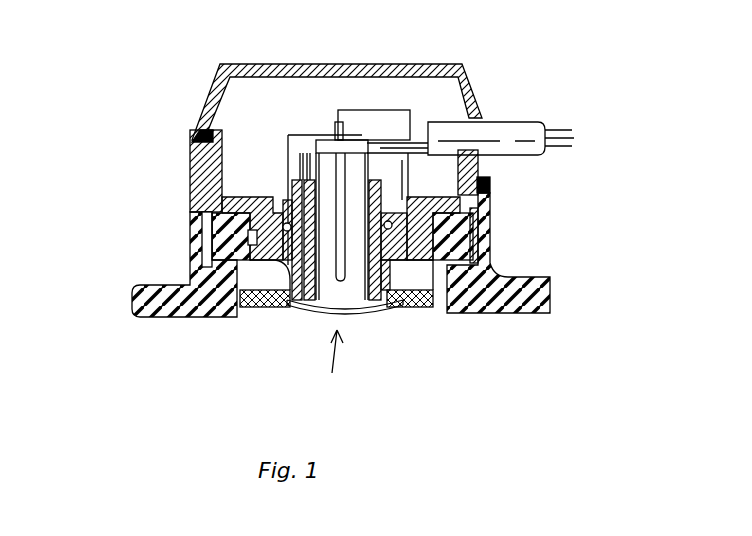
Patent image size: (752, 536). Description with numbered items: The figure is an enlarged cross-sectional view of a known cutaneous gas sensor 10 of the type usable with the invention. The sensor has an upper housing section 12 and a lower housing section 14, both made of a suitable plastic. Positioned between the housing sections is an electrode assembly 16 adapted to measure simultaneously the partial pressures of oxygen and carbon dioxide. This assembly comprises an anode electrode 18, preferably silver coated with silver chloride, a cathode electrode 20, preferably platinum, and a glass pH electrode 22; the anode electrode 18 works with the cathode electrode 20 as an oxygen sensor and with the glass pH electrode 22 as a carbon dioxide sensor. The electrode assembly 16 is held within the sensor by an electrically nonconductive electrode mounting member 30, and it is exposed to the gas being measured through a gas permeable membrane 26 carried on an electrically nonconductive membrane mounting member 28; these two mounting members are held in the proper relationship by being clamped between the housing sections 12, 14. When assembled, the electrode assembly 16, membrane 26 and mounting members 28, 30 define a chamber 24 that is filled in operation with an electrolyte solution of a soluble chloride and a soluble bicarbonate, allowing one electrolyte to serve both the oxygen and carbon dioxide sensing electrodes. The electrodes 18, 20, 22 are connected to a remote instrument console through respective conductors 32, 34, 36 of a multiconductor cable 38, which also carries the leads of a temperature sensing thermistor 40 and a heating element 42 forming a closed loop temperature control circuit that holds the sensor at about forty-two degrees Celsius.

The cutaneous gas sensor 10 is at (72, 91).
The upper housing section 12 is at (478, 92).
The lower housing section 14 is at (505, 277).
The electrode assembly 16 is at (336, 368).
The anode electrode 18 is at (265, 308).
The cathode electrode 20 is at (287, 307).
The glass pH electrode 22 is at (355, 300).
The chamber 24 is at (431, 300).
The gas permeable membrane 26 is at (317, 310).
The membrane mounting member 28 is at (435, 303).
The electrode mounting member 30 is at (190, 150).
The conductor 32 is at (393, 140).
The conductor 34 is at (290, 134).
The conductor 36 is at (337, 122).
The multiconductor cable 38 is at (523, 156).
The temperature sensing thermistor 40 is at (383, 310).
The heating element 42 is at (250, 307).